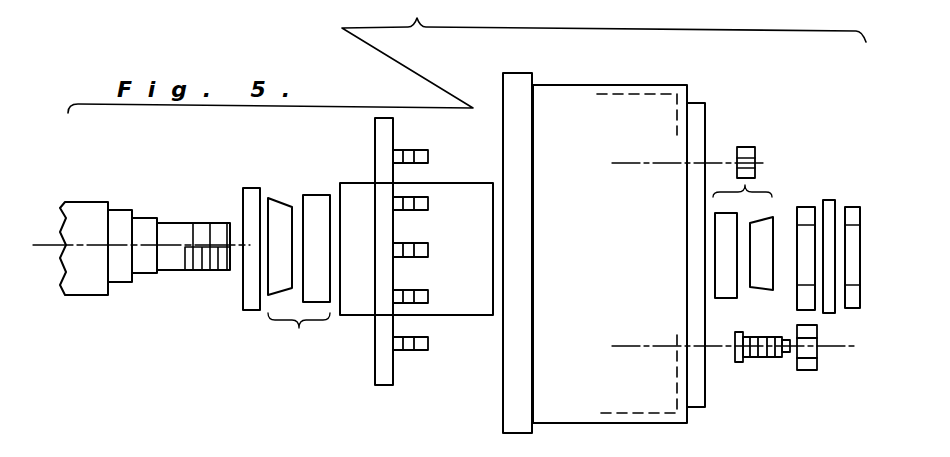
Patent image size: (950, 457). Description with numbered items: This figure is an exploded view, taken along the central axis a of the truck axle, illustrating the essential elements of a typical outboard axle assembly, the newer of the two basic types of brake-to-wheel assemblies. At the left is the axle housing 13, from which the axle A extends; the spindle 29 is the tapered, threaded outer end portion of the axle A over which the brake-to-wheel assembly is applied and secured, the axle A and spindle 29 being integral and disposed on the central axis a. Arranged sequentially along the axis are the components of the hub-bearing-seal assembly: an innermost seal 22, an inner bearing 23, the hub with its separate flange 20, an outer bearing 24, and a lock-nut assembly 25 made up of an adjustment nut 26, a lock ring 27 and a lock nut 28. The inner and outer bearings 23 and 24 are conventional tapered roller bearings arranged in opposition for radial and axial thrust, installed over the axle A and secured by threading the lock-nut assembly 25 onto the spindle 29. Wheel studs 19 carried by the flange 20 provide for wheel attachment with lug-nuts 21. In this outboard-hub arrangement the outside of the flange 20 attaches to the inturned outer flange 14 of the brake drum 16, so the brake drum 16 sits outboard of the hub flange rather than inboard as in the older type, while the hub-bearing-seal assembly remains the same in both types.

The axle housing 13 is at (99, 205).
The spindle 29 is at (172, 255).
The axle A is at (173, 228).
The central axis a is at (47, 247).
The innermost seal 22 is at (238, 312).
The inner bearing 23 is at (299, 328).
The outer flange of the brake drum 14 is at (400, 130).
The wheel studs 19 is at (430, 157).
The brake drum 16 is at (624, 85).
The separate flange 20 is at (700, 123).
The lug-nuts 21 is at (757, 151).
The outer bearing 24 is at (745, 185).
The lock-nut assembly 25 is at (872, 228).
The adjustment nut 26 is at (798, 296).
The lock ring 27 is at (834, 313).
The lock nut 28 is at (853, 274).